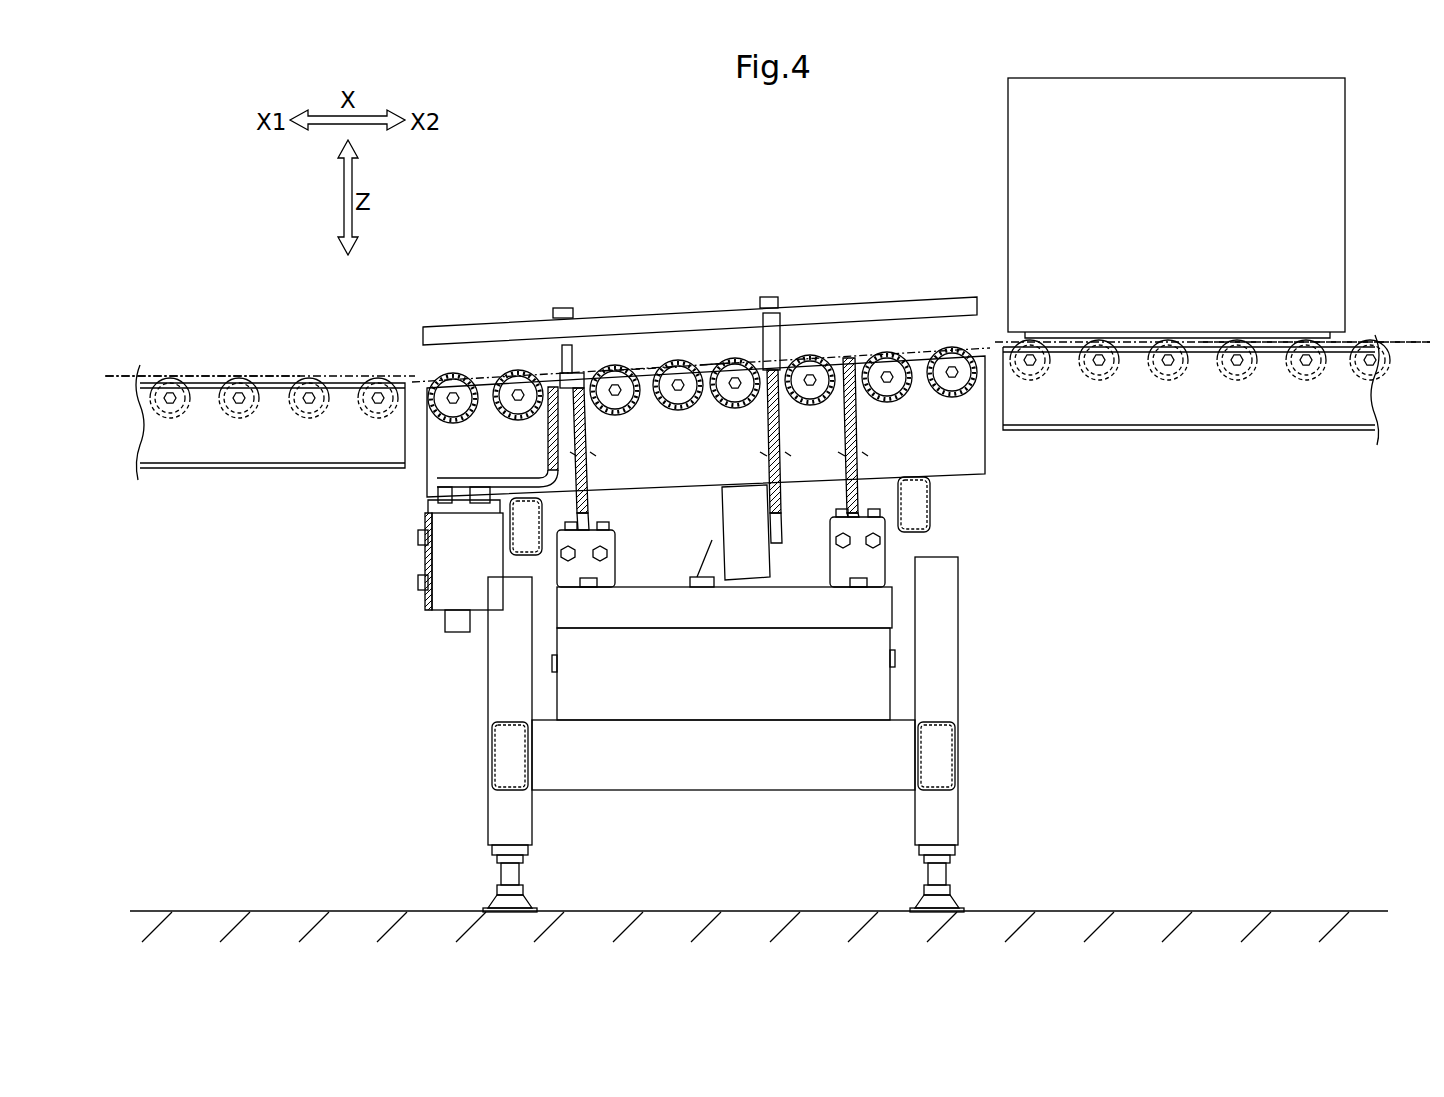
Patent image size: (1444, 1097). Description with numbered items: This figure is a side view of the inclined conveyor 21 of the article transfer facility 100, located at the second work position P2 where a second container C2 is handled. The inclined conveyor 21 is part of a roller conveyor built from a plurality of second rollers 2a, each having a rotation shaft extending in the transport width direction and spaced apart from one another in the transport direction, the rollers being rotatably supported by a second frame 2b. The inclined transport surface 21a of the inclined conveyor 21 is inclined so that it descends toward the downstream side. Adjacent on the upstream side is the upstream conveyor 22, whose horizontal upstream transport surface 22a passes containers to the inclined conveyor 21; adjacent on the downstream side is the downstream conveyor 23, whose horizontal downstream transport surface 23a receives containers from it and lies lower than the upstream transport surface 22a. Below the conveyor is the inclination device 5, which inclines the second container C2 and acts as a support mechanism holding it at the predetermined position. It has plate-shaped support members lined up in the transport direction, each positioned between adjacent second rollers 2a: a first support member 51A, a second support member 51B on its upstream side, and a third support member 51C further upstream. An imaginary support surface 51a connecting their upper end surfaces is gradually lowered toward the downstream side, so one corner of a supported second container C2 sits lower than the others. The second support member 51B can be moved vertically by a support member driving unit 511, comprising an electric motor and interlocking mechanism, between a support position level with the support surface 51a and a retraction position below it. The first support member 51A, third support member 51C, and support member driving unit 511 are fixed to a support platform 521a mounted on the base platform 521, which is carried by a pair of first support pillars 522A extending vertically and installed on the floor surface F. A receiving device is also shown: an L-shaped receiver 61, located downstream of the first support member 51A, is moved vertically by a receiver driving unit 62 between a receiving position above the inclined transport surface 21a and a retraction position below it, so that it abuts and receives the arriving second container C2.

The article transfer facility 100 is at (600, 176).
The second work position P2 is at (729, 270).
The second container C2 is at (1027, 125).
The floor surface F is at (1142, 910).
The second rollers 2a is at (309, 378).
The second frame 2b is at (980, 472).
The inclined conveyor 21 is at (723, 411).
The inclined transport surface 21a is at (643, 372).
The upstream conveyor 22 is at (1212, 351).
The upstream transport surface 22a is at (1390, 340).
The downstream conveyor 23 is at (260, 394).
The downstream transport surface 23a is at (205, 373).
The inclination device 5 is at (1036, 652).
The first support member 51A is at (588, 440).
The second support member 51B is at (768, 407).
The third support member 51C is at (856, 400).
The support surface 51a is at (713, 352).
The support member driving unit 511 is at (752, 573).
The base platform 521 is at (720, 770).
The support platform 521a is at (870, 605).
The first support pillars 522A is at (490, 700).
The receiver 61 is at (548, 425).
The receiver driving unit 62 is at (440, 595).